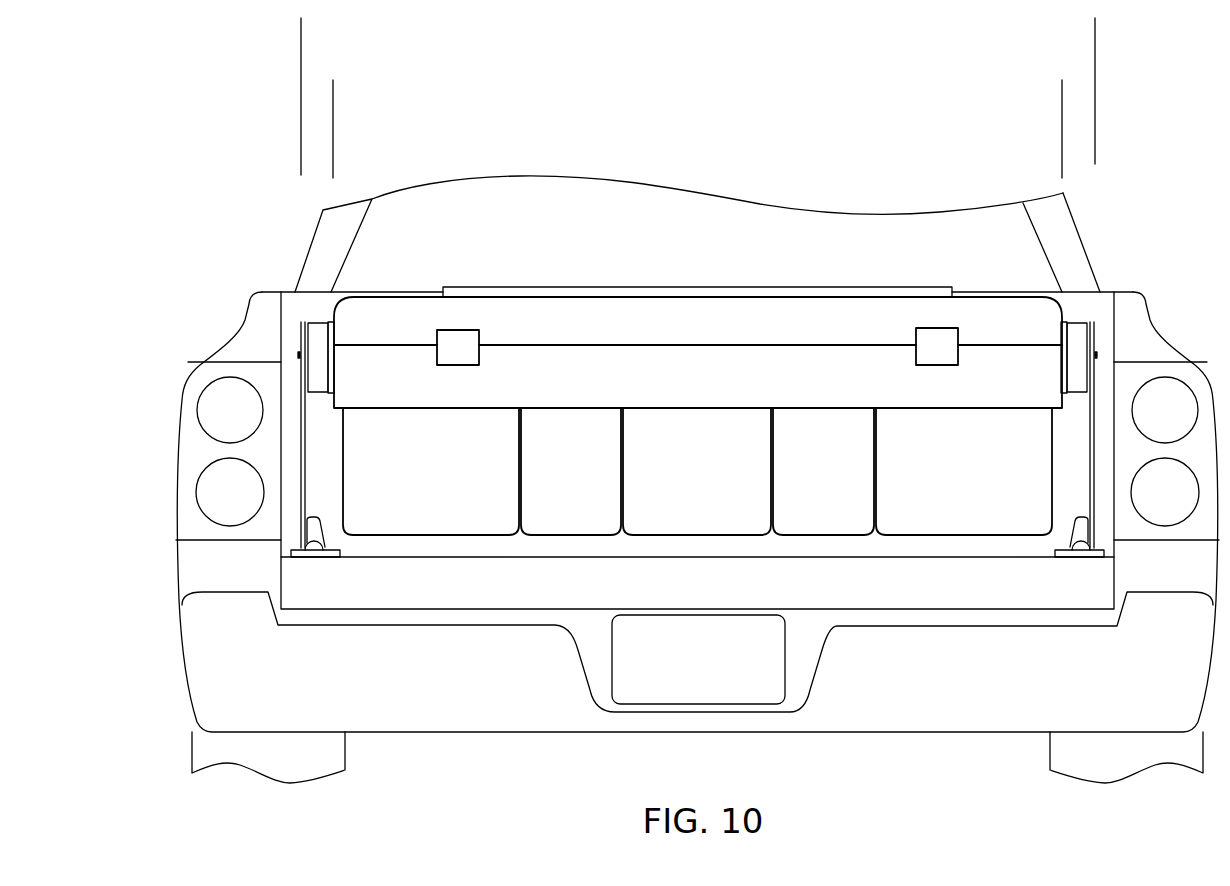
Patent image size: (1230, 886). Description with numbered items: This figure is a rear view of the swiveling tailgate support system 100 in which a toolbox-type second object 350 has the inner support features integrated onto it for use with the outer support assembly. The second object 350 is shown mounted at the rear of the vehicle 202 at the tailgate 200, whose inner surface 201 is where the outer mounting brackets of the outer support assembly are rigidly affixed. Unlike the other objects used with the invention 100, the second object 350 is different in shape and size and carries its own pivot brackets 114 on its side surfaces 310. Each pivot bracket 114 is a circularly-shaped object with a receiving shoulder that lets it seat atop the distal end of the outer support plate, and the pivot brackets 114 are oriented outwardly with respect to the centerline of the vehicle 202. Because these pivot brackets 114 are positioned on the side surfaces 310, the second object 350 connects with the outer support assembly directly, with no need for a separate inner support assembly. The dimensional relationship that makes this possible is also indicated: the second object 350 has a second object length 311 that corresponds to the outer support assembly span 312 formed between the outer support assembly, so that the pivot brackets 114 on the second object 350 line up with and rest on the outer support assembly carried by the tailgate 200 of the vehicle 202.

The swiveling tailgate support system 100 is at (255, 165).
The pivot bracket 114 is at (322, 323).
The tailgate 200 is at (385, 593).
The inner surface 201 is at (443, 548).
The vehicle 202 is at (1080, 238).
The side surfaces 310 is at (343, 470).
The second object length 311 is at (333, 101).
The outer support assembly span 312 is at (301, 41).
The second object 350 is at (800, 328).